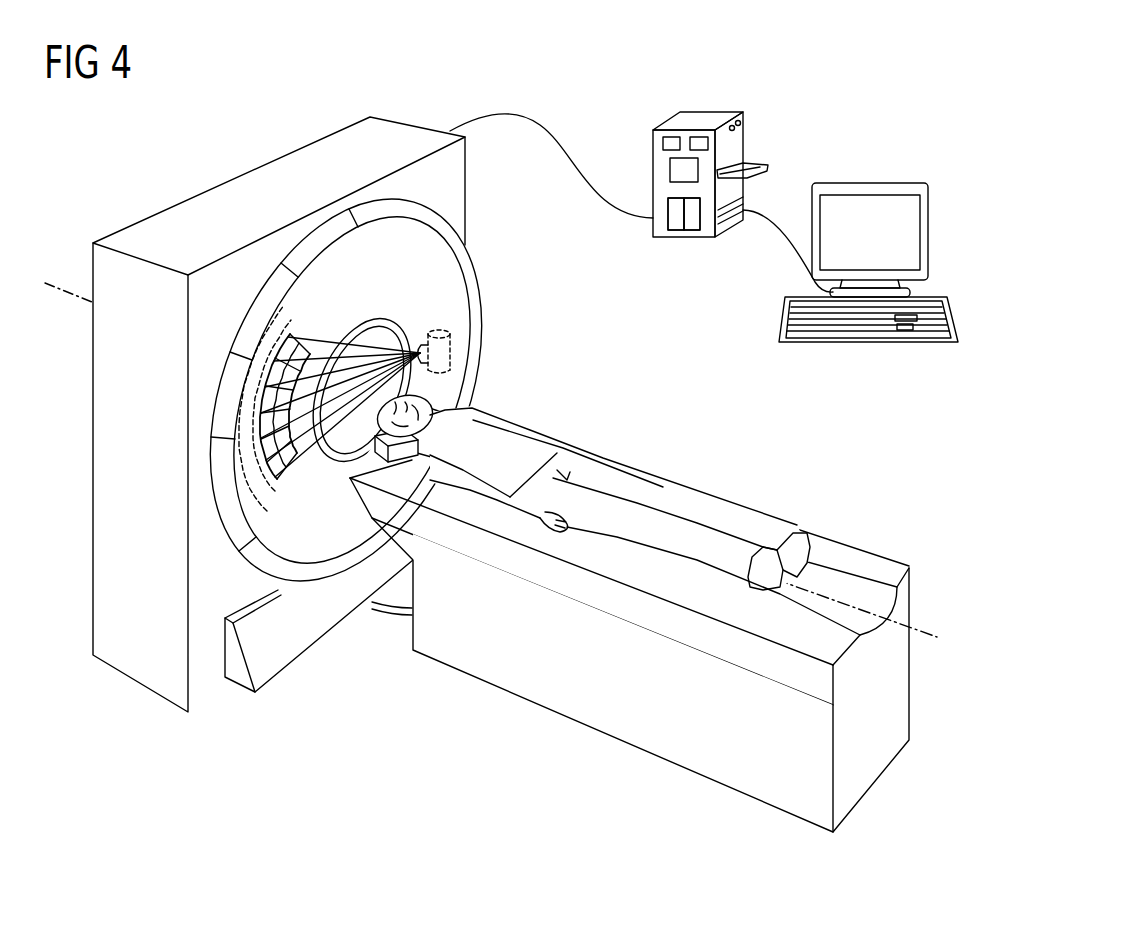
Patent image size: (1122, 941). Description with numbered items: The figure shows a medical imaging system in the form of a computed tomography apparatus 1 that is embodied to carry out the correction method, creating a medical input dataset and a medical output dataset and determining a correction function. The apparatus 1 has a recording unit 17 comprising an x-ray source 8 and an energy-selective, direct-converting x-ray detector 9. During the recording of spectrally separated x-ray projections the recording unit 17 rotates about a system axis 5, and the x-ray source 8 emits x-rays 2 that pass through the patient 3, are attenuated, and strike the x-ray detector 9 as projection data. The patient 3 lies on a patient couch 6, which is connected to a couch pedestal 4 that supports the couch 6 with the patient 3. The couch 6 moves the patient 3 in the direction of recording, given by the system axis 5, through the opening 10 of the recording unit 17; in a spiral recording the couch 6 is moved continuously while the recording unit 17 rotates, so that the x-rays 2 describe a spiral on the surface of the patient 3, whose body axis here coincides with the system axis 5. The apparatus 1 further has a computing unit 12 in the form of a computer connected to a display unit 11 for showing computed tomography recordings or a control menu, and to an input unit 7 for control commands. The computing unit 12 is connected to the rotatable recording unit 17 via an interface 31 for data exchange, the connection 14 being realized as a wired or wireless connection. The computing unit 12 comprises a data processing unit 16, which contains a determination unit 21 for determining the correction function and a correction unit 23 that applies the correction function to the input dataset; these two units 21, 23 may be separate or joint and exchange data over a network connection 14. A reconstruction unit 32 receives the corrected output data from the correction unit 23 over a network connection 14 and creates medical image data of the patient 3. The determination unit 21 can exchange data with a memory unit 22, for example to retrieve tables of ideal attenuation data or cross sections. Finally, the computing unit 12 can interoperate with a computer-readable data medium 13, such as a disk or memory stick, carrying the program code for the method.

The computed tomography apparatus 1 is at (82, 602).
The x-rays 2 is at (383, 353).
The patient 3 is at (510, 440).
The couch pedestal 4 is at (543, 693).
The system axis 5 is at (938, 622).
The patient couch 6 is at (875, 563).
The input unit 7 is at (848, 345).
The x-ray source 8 is at (450, 350).
The x-ray detector 9 is at (286, 530).
The opening 10 is at (350, 347).
The display unit 11 is at (870, 183).
The computing unit 12 is at (688, 118).
The computer-readable data medium 13 is at (748, 168).
The connection 14 is at (533, 113).
The data processing unit 16 is at (680, 244).
The recording unit 17 is at (484, 295).
The determination unit 21 is at (662, 225).
The memory unit 22 is at (670, 168).
The correction unit 23 is at (695, 228).
The interface 31 is at (697, 130).
The reconstruction unit 32 is at (662, 140).